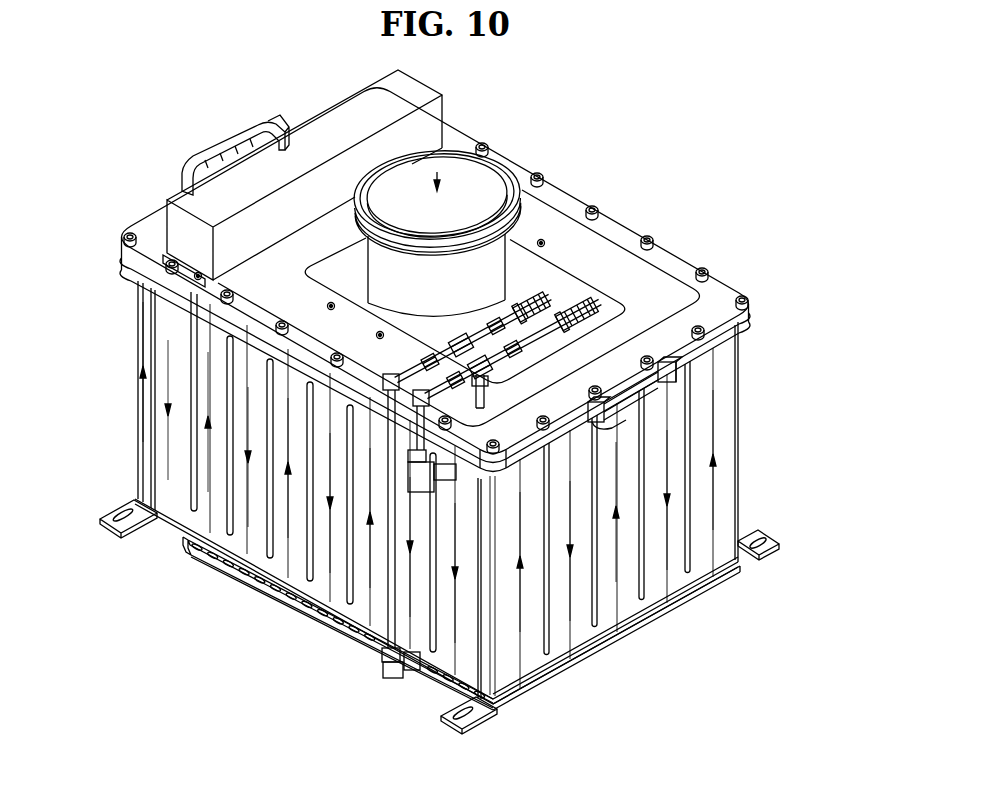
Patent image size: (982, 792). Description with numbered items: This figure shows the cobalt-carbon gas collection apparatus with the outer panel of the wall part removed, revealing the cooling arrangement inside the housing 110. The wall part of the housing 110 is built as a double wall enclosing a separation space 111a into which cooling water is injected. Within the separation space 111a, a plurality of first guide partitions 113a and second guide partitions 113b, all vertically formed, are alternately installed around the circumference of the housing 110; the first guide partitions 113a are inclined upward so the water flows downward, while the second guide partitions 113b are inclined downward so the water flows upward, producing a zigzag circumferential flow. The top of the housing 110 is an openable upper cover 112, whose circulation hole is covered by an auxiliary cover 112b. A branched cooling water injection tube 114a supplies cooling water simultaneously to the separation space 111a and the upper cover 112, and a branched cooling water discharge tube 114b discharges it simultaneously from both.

The housing 110 is at (747, 428).
The separation space 111a is at (697, 550).
The upper cover 112 is at (722, 288).
The auxiliary cover 112b is at (573, 228).
The first guide partitions 113a is at (500, 702).
The second guide partitions 113b is at (547, 630).
The cooling water injection tube 114a is at (575, 296).
The cooling water discharge tube 114b is at (535, 292).